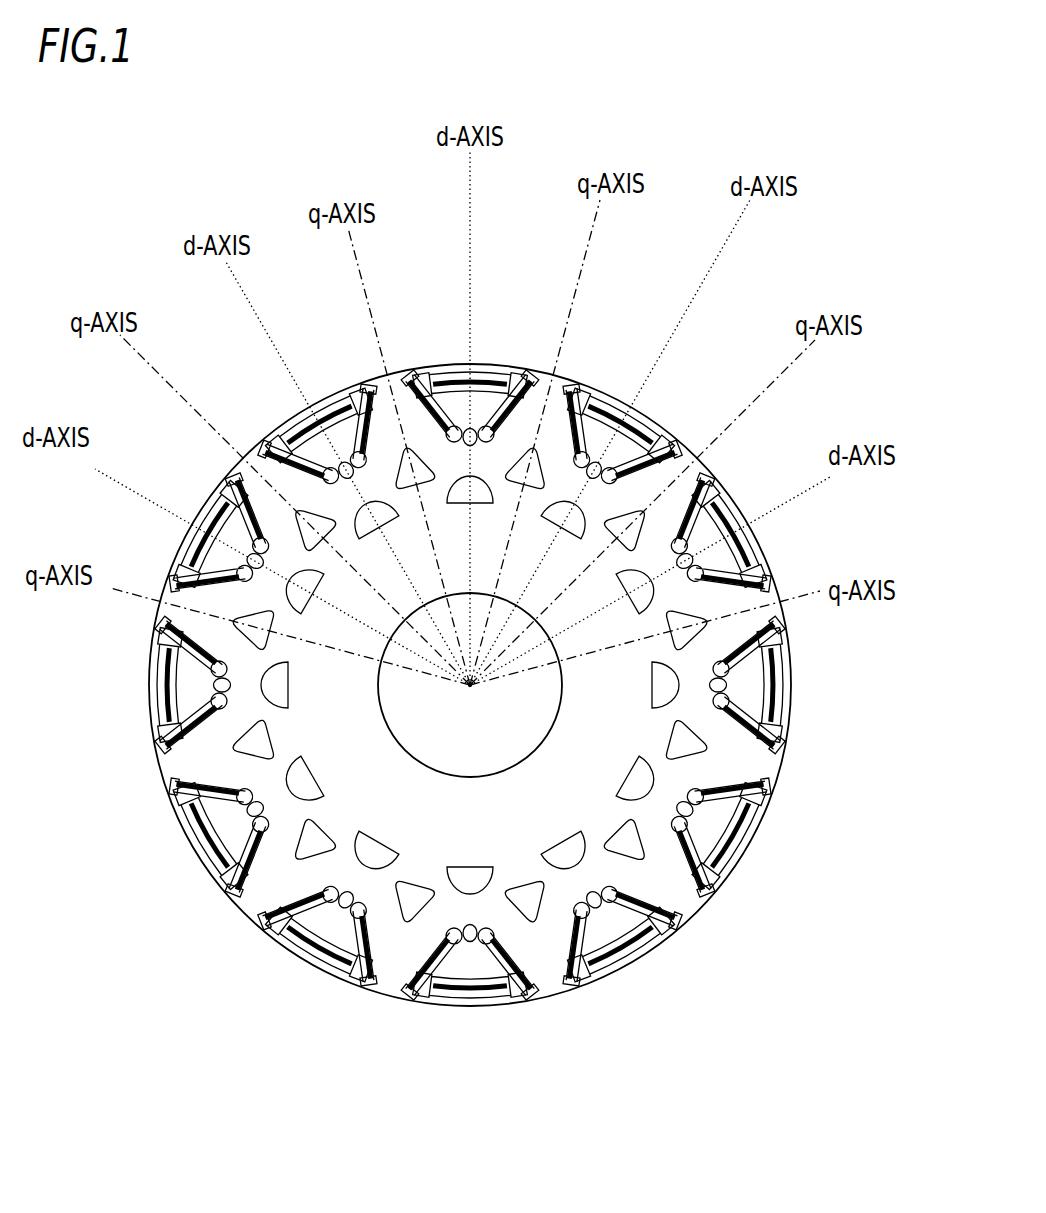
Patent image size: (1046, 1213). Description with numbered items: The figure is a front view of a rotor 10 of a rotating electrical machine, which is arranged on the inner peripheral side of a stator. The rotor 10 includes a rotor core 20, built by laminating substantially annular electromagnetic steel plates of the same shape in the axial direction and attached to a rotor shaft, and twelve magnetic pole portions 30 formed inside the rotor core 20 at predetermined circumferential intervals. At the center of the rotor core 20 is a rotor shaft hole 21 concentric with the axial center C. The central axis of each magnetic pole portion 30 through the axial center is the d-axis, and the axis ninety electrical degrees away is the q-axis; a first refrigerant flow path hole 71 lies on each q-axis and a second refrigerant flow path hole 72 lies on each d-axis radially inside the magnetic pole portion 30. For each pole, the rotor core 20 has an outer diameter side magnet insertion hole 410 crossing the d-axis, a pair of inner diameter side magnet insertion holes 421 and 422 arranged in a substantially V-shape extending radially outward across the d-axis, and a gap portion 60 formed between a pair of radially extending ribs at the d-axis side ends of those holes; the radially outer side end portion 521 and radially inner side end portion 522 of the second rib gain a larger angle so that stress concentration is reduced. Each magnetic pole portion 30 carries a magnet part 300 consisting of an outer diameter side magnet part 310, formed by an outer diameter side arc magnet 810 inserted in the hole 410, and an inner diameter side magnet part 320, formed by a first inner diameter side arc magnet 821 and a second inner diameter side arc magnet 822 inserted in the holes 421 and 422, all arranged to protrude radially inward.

The rotor 10 is at (706, 160).
The rotor core 20 is at (632, 962).
The rotor shaft hole 21 is at (535, 750).
The magnetic pole portion 30 is at (505, 368).
The magnet part 300 is at (95, 858).
The outer diameter side magnet part 310 is at (200, 845).
The inner diameter side magnet part 320 is at (215, 855).
The outer diameter side magnet insertion hole 410 is at (462, 380).
The first inner diameter side magnet insertion hole 421 is at (420, 385).
The second inner diameter side magnet insertion hole 422 is at (355, 420).
The gap portion 60 is at (468, 428).
The first refrigerant flow path hole 71 is at (414, 468).
The second refrigerant flow path hole 72 is at (380, 520).
The radially outer side end portion 521 is at (368, 522).
The radially inner side end portion 522 is at (385, 512).
The outer diameter side arc magnet 810 is at (492, 372).
The first inner diameter side arc magnet 821 is at (412, 373).
The second inner diameter side arc magnet 822 is at (530, 372).